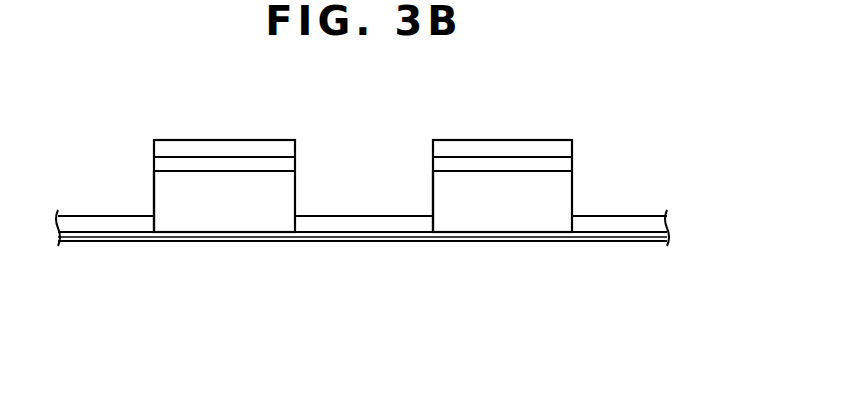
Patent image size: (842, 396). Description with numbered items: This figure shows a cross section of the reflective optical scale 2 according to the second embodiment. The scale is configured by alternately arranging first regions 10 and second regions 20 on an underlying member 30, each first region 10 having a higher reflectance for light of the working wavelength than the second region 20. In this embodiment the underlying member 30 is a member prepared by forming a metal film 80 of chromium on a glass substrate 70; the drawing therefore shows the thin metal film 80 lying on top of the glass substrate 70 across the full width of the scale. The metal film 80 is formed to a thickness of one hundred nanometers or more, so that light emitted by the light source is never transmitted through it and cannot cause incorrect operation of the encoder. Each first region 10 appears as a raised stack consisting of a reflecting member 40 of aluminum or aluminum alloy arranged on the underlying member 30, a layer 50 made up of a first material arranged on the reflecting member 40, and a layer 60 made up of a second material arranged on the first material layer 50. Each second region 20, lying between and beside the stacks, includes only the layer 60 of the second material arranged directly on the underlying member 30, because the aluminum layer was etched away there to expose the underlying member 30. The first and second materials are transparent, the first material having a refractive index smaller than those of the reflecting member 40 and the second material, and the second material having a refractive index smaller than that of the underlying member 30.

The reflective optical scale 2 is at (487, 282).
The first region 10 is at (155, 120).
The second region 20 is at (154, 133).
The underlying member 30 is at (677, 233).
The reflecting member 40 is at (153, 191).
The layer made up of first material 50 is at (153, 162).
The layer made up of second material 60 is at (105, 226).
The glass substrate 70 is at (306, 250).
The metal film 80 is at (403, 242).